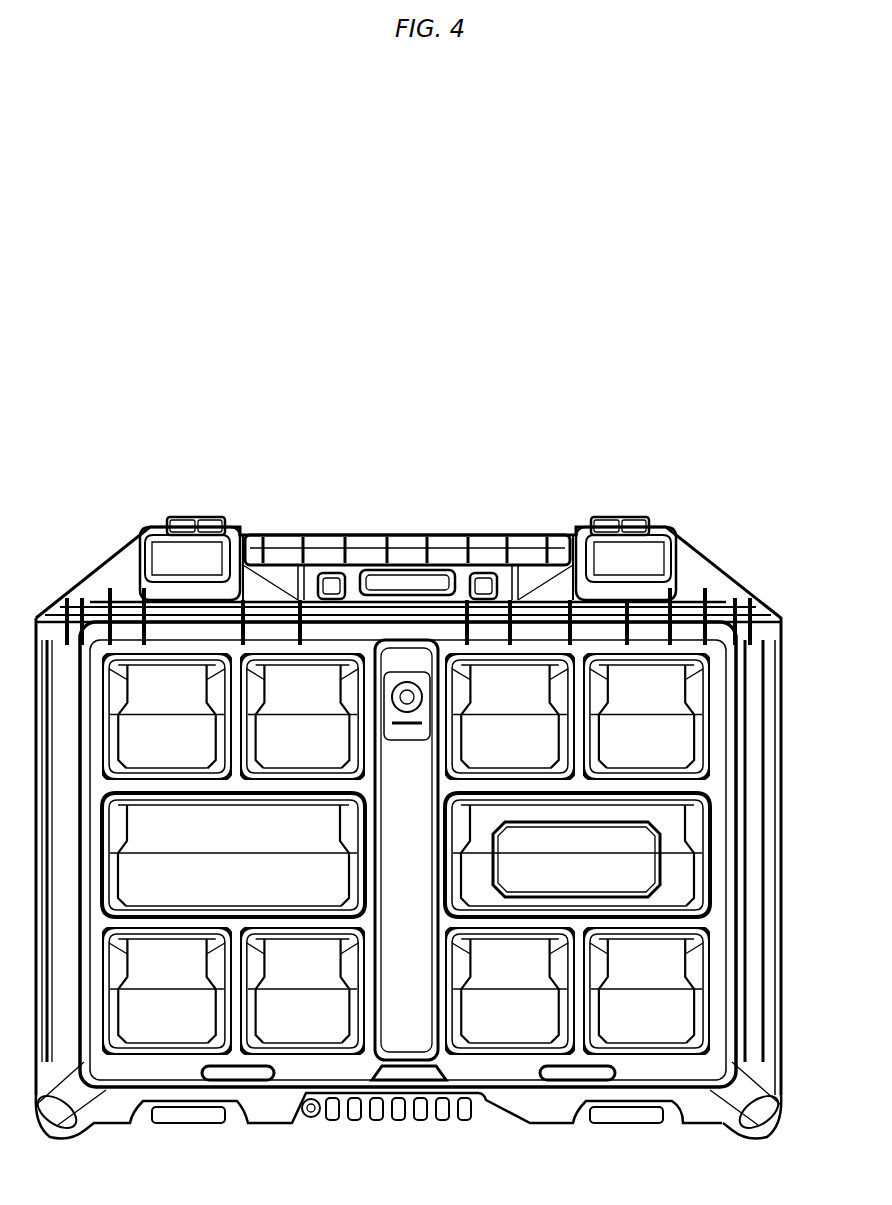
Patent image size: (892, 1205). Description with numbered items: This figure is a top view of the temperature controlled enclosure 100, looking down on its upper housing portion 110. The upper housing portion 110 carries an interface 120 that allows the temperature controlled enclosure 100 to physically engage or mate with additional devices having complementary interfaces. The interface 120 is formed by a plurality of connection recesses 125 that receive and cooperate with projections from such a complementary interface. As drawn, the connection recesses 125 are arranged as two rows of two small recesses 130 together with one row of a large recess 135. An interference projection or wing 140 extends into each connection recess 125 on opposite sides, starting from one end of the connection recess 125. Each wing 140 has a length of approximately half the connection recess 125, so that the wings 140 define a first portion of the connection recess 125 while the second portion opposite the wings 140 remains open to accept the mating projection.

The temperature controlled enclosure 100 is at (650, 197).
The upper housing portion 110 is at (708, 582).
The interface 120 is at (522, 452).
The connection recess 125 is at (150, 712).
The small recess 130 is at (622, 740).
The large recess 135 is at (626, 864).
The interference projection or wing 140 is at (456, 683).